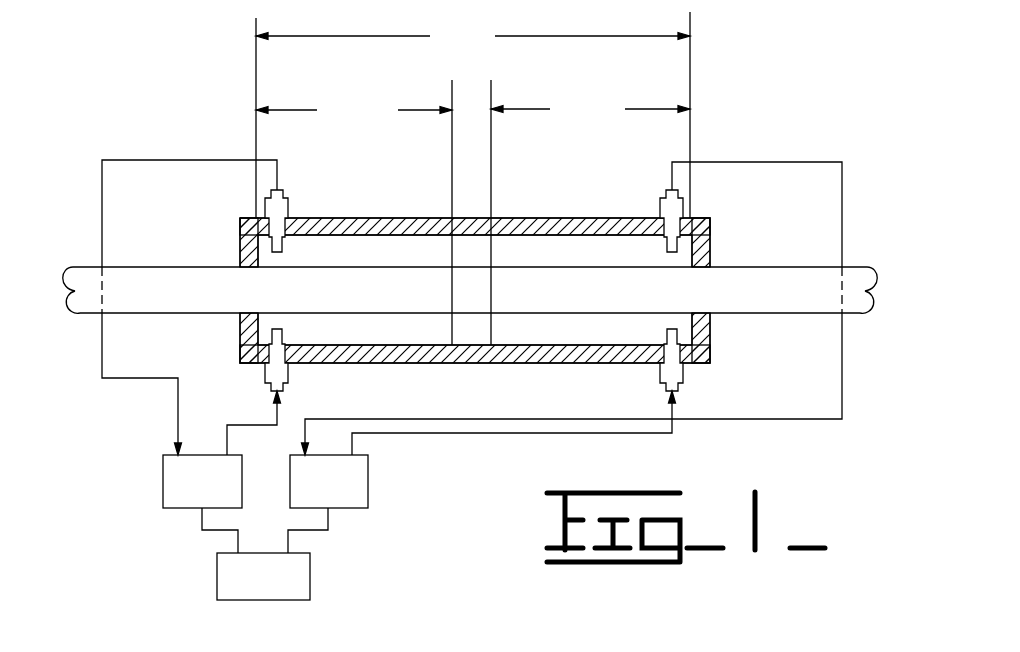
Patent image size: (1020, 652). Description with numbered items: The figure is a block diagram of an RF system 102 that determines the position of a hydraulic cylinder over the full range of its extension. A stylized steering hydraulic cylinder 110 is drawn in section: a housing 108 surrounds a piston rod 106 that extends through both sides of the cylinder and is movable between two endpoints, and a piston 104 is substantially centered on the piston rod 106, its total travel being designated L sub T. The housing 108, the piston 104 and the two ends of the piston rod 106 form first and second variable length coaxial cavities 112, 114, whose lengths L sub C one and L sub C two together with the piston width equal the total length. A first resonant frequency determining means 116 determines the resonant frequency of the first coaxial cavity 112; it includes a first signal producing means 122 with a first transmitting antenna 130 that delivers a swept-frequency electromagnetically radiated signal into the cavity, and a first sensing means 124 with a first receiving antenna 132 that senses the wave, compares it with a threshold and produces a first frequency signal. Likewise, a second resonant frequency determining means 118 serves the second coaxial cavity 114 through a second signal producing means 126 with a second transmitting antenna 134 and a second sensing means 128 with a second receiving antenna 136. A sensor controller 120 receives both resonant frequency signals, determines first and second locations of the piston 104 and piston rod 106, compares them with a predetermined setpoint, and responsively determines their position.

The RF system 102 is at (204, 525).
The piston 104 is at (452, 329).
The piston rod 106 is at (87, 265).
The housing 108 is at (402, 364).
The steering hydraulic cylinder 110 is at (478, 455).
The first variable length coaxial cavity 112 is at (400, 261).
The second variable length coaxial cavity 114 is at (602, 261).
The first coaxial cavity resonant frequency determining means 116 is at (226, 494).
The second coaxial cavity resonant frequency determining means 118 is at (354, 494).
The sensor controller 120 is at (290, 588).
The first electromagnetically radiated signal producing means 122 is at (230, 400).
The first electromagnetic wave signal sensing means 124 is at (221, 128).
The second electromagnetically radiated signal producing means 126 is at (712, 395).
The second electromagnetic wave signal sensing means 128 is at (790, 150).
The first transmitting antenna 130 is at (288, 381).
The first receiving antenna 132 is at (290, 200).
The second transmitting antenna 134 is at (658, 381).
The second receiving antenna 136 is at (658, 200).